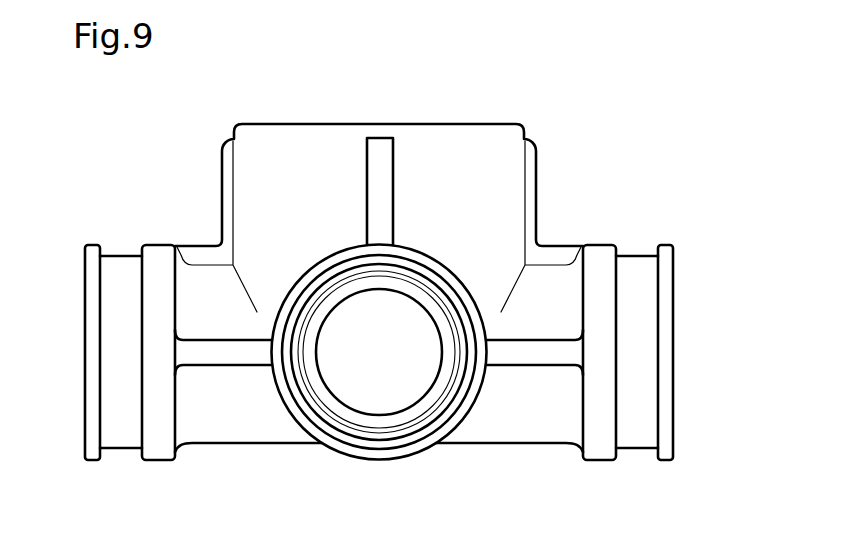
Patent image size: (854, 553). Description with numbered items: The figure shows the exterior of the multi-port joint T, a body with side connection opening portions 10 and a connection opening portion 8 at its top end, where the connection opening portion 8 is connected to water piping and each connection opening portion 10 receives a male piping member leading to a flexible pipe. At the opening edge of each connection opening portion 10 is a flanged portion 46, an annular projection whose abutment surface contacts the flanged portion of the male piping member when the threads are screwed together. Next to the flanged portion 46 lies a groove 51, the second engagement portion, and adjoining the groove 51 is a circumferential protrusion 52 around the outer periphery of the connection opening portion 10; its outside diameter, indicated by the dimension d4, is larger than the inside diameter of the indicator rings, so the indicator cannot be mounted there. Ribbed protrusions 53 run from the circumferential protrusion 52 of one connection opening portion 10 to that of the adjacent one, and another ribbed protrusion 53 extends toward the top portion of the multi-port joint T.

The connection opening portion 8 is at (490, 142).
The connection opening portion 10 is at (283, 402).
The flanged portion 46 is at (97, 247).
The groove 51 is at (117, 257).
The circumferential protrusion 52 is at (157, 257).
The ribbed protrusion 53 is at (373, 175).
The multi-port joint T is at (460, 150).
The diameter d4 is at (70, 287).